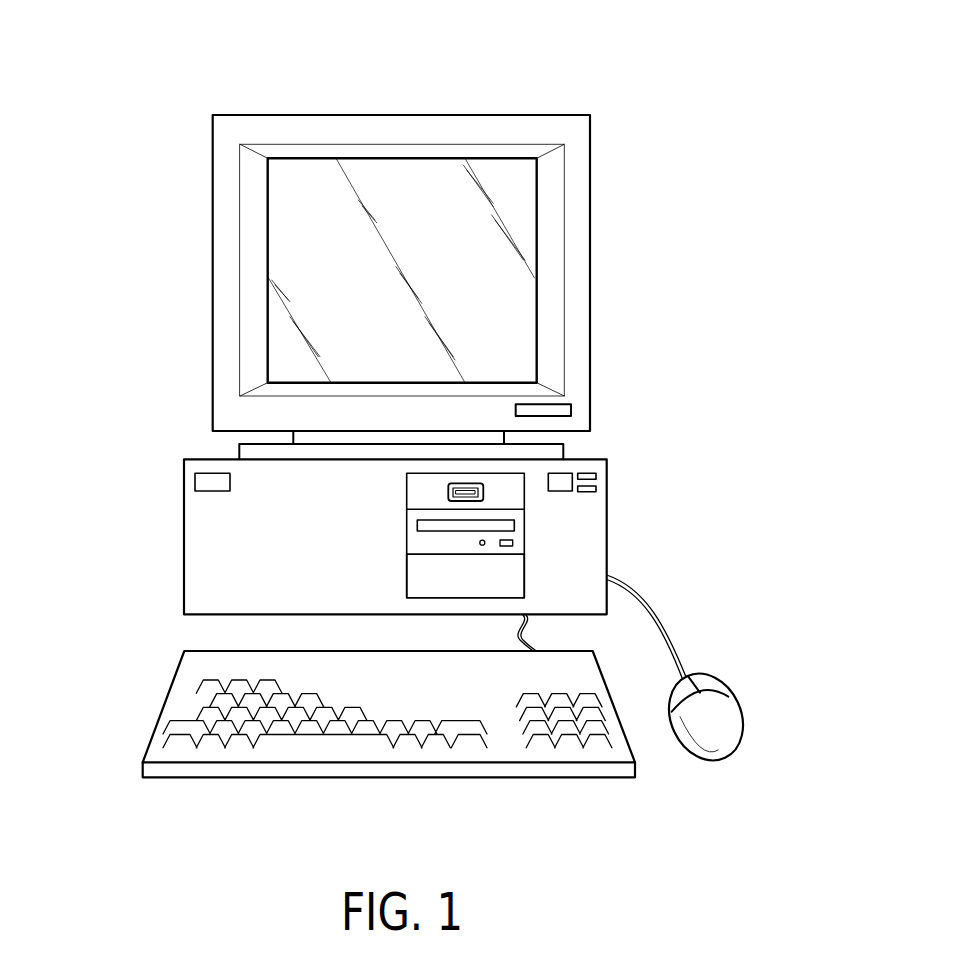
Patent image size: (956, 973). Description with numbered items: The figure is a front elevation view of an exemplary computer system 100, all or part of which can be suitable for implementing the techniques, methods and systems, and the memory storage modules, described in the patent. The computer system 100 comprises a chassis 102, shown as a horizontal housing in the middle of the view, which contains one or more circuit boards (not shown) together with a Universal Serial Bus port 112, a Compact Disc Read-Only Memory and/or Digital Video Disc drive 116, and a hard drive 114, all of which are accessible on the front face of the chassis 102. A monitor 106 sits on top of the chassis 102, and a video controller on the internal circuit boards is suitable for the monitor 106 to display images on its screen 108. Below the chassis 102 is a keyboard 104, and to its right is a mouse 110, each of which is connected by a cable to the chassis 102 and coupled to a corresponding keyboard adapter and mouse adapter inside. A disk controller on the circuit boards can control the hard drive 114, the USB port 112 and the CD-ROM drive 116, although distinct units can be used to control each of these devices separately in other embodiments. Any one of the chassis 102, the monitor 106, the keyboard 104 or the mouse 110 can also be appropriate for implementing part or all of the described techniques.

The computer system 100 is at (583, 90).
The chassis 102 is at (183, 538).
The keyboard 104 is at (167, 700).
The monitor 106 is at (288, 114).
The screen 108 is at (317, 275).
The mouse 110 is at (723, 707).
The Universal Serial Bus (USB) port 112 is at (485, 488).
The hard drive 114 is at (516, 574).
The CD-ROM and/or DVD drive 116 is at (515, 532).